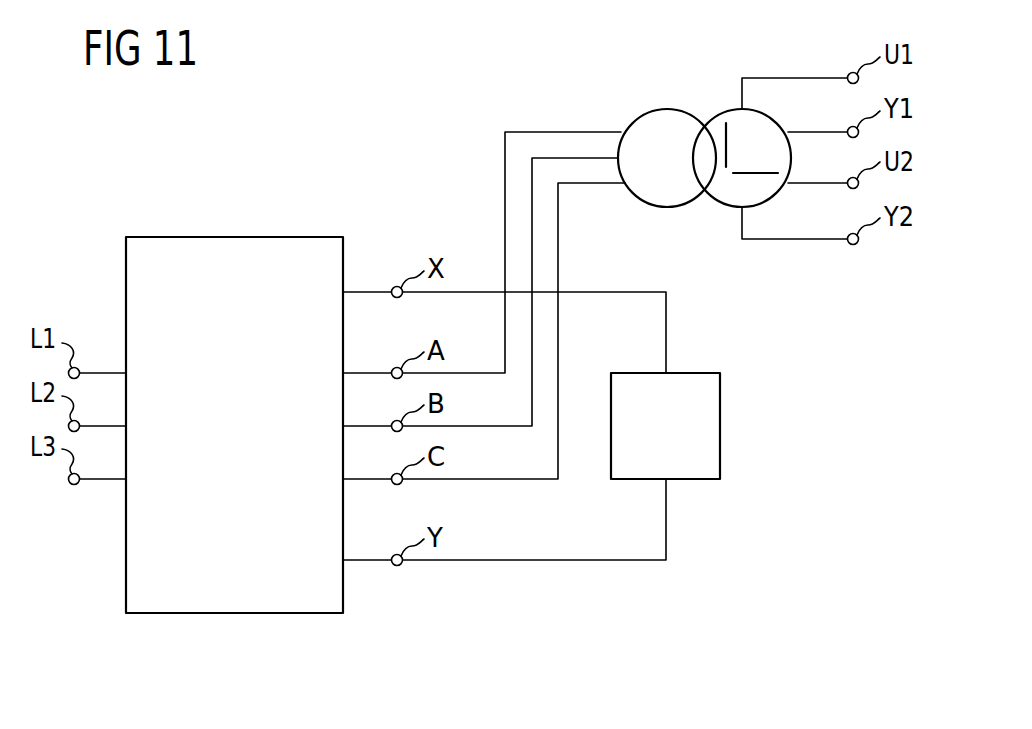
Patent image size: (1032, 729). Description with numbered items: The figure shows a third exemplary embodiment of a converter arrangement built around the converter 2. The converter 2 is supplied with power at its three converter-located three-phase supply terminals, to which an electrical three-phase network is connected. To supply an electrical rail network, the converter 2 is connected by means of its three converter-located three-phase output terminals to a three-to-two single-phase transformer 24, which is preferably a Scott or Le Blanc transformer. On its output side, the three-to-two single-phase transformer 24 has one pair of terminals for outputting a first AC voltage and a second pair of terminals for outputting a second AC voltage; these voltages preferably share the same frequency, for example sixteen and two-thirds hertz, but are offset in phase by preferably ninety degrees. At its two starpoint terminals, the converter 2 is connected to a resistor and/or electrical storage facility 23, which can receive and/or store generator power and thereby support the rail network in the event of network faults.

The converter 2 is at (125, 563).
The resistor and/or electrical storage facility 23 is at (696, 480).
The three-to-two single-phase transformer 24 is at (660, 206).